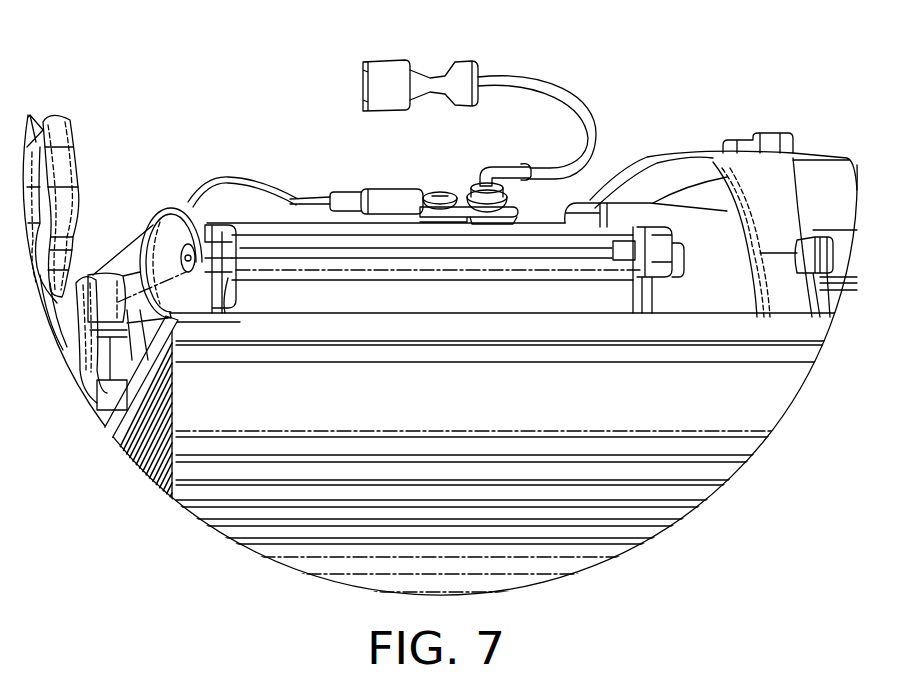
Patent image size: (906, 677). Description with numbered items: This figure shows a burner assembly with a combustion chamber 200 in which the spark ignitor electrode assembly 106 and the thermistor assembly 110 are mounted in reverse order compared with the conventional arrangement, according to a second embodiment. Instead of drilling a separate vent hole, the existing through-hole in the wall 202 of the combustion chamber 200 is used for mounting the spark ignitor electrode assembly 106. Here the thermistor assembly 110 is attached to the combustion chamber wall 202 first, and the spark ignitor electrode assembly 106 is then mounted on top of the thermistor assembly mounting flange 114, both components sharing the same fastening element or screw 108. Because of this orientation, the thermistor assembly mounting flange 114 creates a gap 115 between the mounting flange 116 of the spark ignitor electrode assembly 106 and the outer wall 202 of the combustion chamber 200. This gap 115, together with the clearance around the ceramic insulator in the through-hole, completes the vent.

The spark ignitor electrode assembly 106 is at (553, 78).
The combustion chamber 200 is at (238, 210).
The wall of the combustion chamber 202 is at (290, 210).
The thermistor assembly 110 is at (377, 191).
The fastening element or screw 108 is at (448, 192).
The mounting flange of the spark ignitor electrode assembly 116 is at (505, 190).
The thermistor assembly mounting flange 114 is at (433, 222).
The gap 115 is at (510, 228).